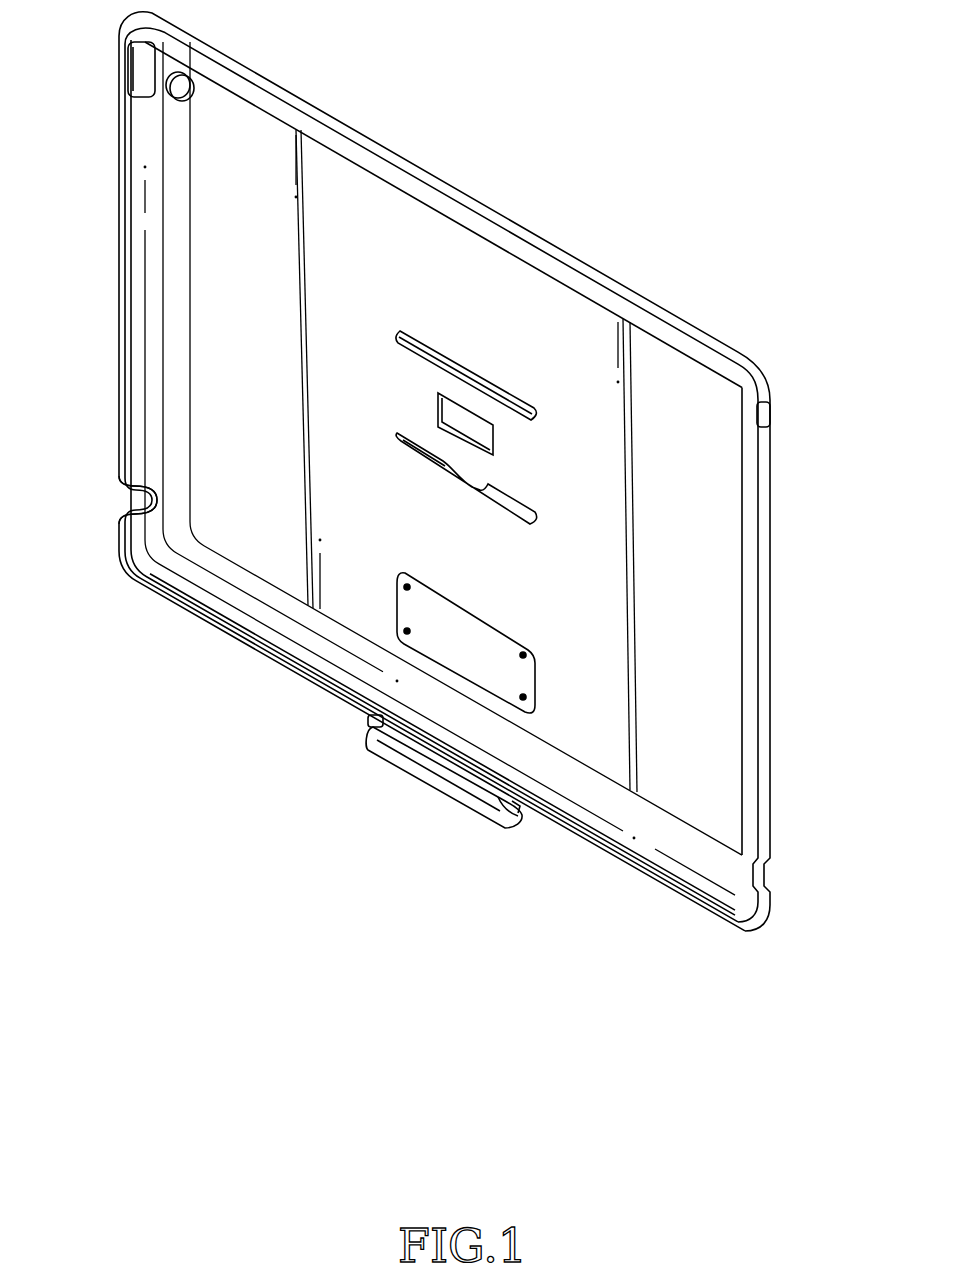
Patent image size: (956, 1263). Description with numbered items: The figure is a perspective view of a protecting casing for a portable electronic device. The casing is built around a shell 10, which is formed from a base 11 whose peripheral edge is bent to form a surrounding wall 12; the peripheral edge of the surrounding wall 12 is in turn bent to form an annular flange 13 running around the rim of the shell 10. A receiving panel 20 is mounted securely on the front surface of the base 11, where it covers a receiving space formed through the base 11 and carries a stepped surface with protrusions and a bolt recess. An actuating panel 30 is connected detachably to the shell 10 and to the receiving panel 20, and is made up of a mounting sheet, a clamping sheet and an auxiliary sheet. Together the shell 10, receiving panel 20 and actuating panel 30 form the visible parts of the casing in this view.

The shell 10 is at (712, 304).
The base 11 is at (693, 543).
The surrounding wall 12 is at (153, 213).
The annular flange 13 is at (118, 352).
The receiving panel 20 is at (462, 660).
The actuating panel 30 is at (489, 814).